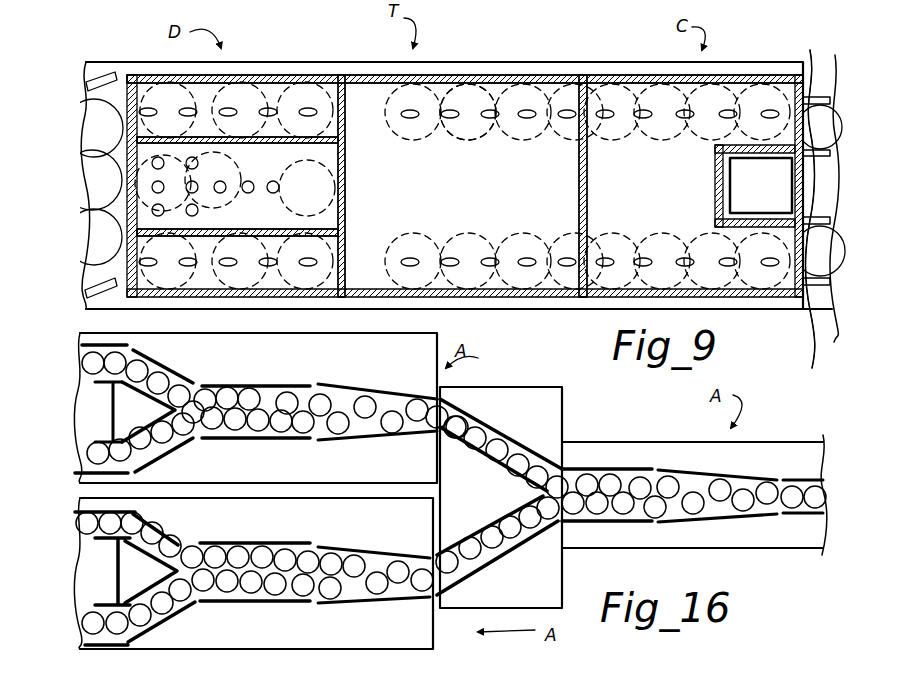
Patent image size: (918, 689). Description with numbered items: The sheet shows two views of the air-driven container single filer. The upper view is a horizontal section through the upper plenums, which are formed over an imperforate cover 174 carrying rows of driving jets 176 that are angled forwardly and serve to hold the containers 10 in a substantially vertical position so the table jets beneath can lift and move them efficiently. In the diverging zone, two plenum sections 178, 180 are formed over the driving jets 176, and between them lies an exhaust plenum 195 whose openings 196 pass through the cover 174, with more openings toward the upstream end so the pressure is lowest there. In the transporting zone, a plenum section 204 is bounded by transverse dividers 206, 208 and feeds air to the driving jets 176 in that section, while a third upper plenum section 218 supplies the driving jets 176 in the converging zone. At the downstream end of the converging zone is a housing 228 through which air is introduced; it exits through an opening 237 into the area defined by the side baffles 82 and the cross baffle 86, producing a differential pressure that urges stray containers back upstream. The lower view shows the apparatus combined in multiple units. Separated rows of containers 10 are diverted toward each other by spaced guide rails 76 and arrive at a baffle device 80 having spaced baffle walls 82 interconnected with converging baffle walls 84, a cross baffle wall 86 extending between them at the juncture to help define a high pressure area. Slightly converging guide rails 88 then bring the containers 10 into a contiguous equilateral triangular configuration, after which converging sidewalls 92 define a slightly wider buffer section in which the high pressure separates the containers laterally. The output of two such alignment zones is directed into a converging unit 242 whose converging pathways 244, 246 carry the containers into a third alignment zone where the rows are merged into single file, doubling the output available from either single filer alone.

In FIG. 16, the containers 10 is at (230, 403).
In FIG. 9, the guide rails 76 is at (810, 62).
In FIG. 16, the baffle device 80 is at (163, 382).
In FIG. 16, the baffle walls 82 is at (98, 382).
In FIG. 9, the converging baffle walls 84 is at (822, 190).
In FIG. 16, the converging baffle walls 84 is at (156, 420).
In FIG. 16, the cross baffle wall 86 is at (155, 366).
In FIG. 16, the guide rails 88 is at (280, 384).
In FIG. 16, the converging sidewalls 92 is at (350, 386).
In FIG. 9, the imperforate cover 174 is at (478, 199).
In FIG. 9, the driving jets 176 is at (320, 107).
In FIG. 9, the plenum section 178 is at (320, 250).
In FIG. 9, the plenum section 180 is at (272, 92).
In FIG. 9, the exhaust plenum 195 is at (345, 175).
In FIG. 9, the openings 196 is at (192, 186).
In FIG. 9, the plenum section 204 is at (493, 88).
In FIG. 9, the divider 206 is at (348, 148).
In FIG. 9, the divider 208 is at (580, 192).
In FIG. 9, the third upper plenum section 218 is at (593, 88).
In FIG. 9, the housing 228 is at (723, 147).
In FIG. 9, the opening 237 is at (737, 170).
In FIG. 16, the converging unit 242 is at (505, 387).
In FIG. 16, the converging pathway 244 is at (515, 553).
In FIG. 16, the converging pathway 246 is at (500, 437).